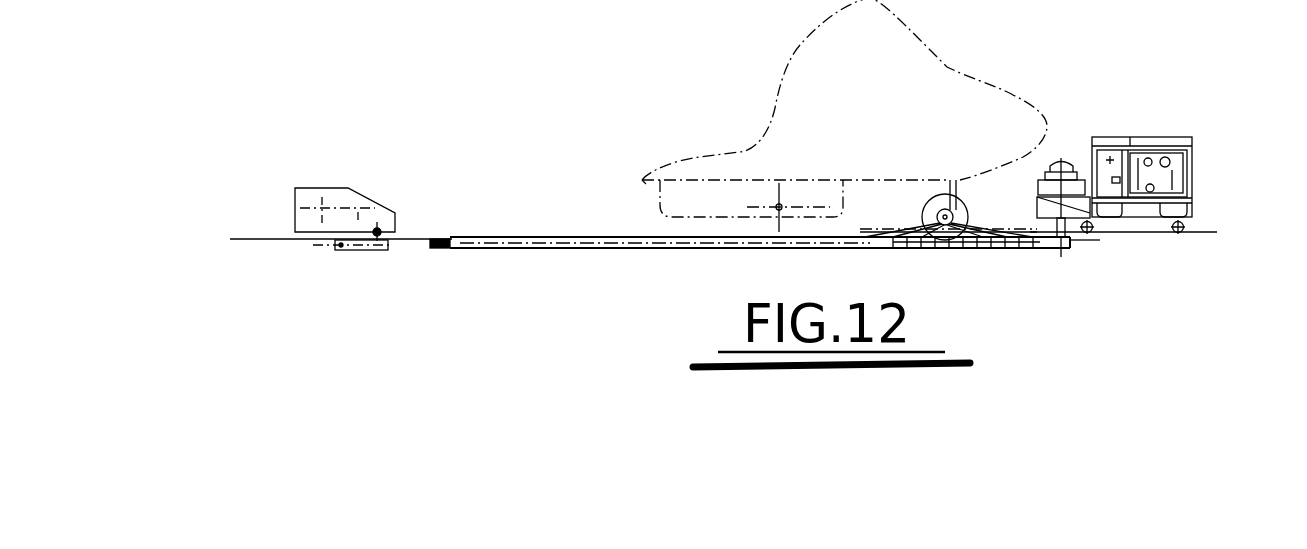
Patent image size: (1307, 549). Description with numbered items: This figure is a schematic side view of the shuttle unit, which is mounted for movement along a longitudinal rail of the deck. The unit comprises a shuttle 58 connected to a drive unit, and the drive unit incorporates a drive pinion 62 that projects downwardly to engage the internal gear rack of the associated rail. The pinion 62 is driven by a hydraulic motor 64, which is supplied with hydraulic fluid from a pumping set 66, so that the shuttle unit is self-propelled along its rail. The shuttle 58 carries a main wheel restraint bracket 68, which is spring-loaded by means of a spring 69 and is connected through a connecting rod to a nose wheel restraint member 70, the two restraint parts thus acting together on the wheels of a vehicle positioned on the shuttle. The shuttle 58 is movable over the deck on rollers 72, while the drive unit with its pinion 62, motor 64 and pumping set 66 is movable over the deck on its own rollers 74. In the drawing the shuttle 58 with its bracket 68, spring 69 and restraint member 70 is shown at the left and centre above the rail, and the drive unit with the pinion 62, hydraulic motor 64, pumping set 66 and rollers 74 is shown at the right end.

The shuttle 58 is at (650, 250).
The drive pinion 62 is at (1062, 250).
The hydraulic motor 64 is at (1062, 165).
The pumping set 66 is at (1177, 162).
The main wheel restraint bracket 68 is at (348, 195).
The spring 69 is at (433, 237).
The nose wheel restraint member 70 is at (935, 245).
The rollers 72 is at (380, 247).
The rollers 74 is at (1092, 228).